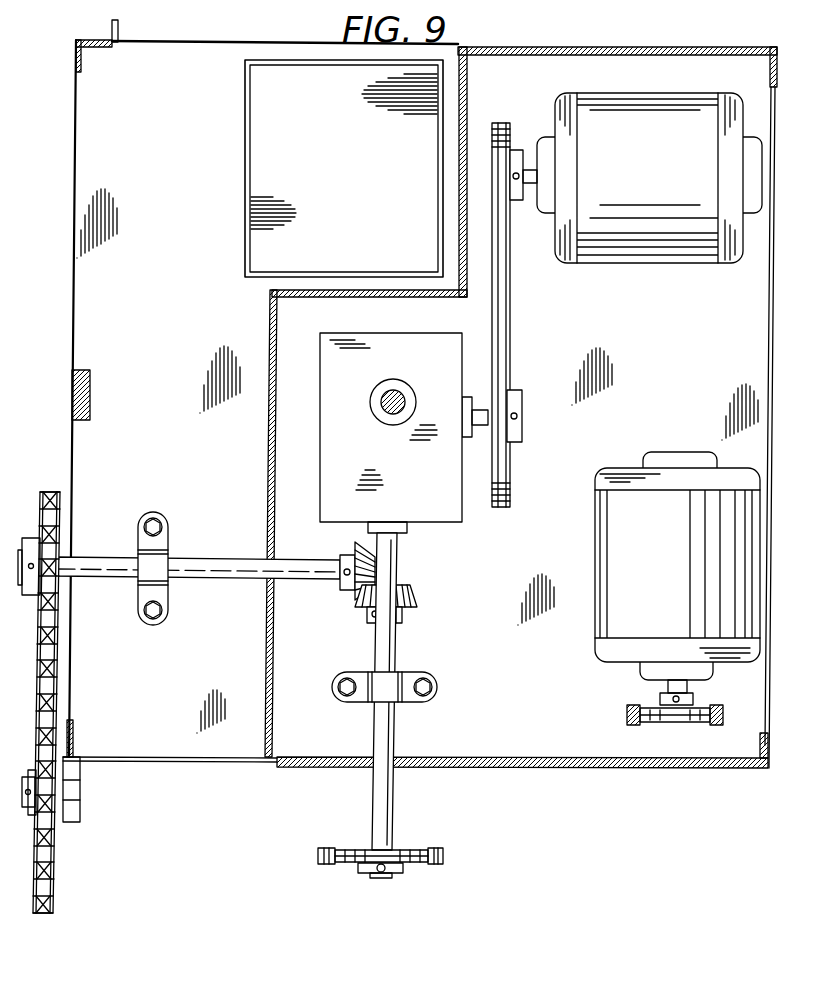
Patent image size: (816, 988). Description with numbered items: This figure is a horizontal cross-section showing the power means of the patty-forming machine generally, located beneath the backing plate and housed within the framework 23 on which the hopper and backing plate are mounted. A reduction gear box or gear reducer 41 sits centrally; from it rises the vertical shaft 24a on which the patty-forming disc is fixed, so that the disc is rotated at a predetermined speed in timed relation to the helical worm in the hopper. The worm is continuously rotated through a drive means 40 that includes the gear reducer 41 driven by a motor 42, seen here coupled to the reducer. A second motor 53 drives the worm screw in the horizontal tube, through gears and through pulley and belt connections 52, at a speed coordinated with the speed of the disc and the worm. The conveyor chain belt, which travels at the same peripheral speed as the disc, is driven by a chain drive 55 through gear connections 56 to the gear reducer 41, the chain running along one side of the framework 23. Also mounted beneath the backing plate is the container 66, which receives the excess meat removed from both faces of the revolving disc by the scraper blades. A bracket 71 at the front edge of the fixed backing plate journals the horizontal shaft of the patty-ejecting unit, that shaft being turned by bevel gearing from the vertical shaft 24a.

The framework 23 is at (70, 321).
The container 66 is at (245, 125).
The bracket 71 is at (70, 390).
The motor 42 is at (640, 265).
The gear reducer 41 is at (440, 517).
The vertical shaft 24a is at (398, 392).
The gear connections 56 is at (350, 608).
The motor 53 is at (595, 607).
The pulley and belt connections 52 is at (624, 724).
The chain drive 55 is at (38, 666).
The drive means 40 is at (394, 834).